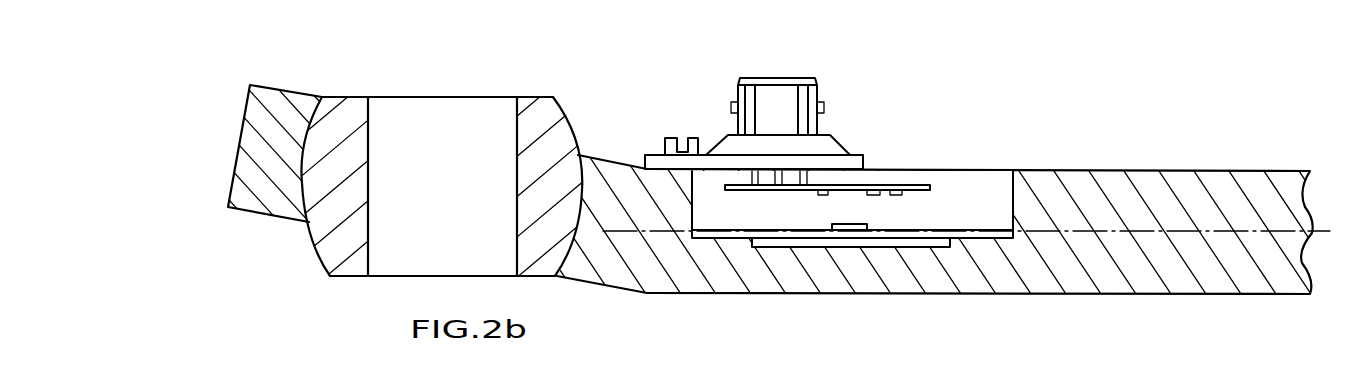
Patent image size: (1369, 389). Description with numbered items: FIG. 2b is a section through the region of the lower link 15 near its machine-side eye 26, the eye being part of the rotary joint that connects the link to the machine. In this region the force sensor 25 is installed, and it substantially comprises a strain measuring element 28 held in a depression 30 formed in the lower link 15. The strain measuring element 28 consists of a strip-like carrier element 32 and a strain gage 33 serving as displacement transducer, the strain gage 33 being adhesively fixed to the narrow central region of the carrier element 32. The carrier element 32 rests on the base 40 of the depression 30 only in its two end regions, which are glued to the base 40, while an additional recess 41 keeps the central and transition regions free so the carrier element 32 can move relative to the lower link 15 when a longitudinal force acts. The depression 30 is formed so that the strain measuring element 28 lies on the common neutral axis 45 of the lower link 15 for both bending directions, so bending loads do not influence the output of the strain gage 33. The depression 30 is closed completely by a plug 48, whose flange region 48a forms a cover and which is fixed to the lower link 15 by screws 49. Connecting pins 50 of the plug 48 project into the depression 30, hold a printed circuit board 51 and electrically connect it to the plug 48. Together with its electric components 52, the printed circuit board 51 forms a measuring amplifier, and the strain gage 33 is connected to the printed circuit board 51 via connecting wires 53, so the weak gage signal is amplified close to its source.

The lower link 15 is at (1193, 197).
The force sensor 25 is at (982, 52).
The eye 26 is at (368, 278).
The strain measuring element 28 is at (928, 212).
The depression 30 is at (985, 195).
The carrier element 32 is at (880, 195).
The strain gage 33 is at (843, 230).
The base of the depression 40 is at (973, 238).
The additional recess 41 is at (760, 245).
The neutral axis 45 is at (1318, 233).
The plug 48 is at (698, 116).
The flange region 48a is at (648, 158).
The screws 49 is at (665, 142).
The connecting pins 50 is at (810, 173).
The printed circuit board 51 is at (884, 186).
The electric components 52 is at (868, 225).
The connecting wires 53 is at (898, 228).